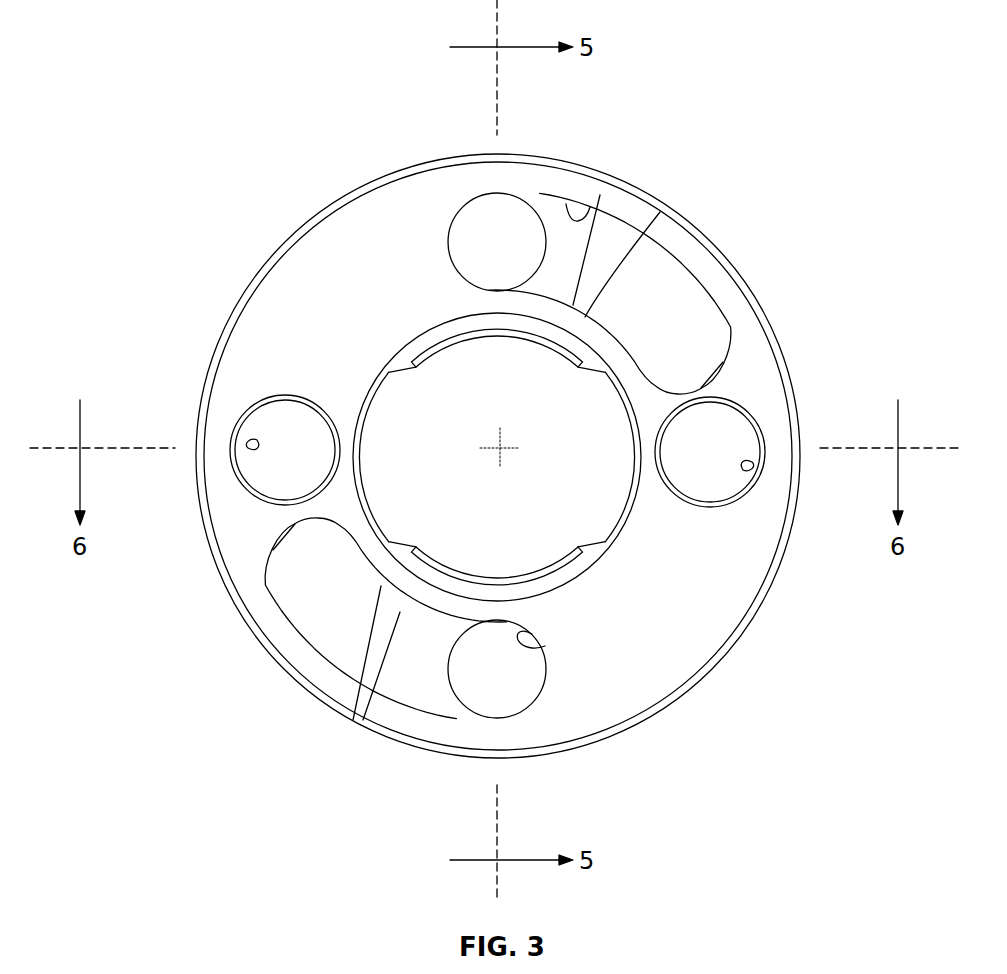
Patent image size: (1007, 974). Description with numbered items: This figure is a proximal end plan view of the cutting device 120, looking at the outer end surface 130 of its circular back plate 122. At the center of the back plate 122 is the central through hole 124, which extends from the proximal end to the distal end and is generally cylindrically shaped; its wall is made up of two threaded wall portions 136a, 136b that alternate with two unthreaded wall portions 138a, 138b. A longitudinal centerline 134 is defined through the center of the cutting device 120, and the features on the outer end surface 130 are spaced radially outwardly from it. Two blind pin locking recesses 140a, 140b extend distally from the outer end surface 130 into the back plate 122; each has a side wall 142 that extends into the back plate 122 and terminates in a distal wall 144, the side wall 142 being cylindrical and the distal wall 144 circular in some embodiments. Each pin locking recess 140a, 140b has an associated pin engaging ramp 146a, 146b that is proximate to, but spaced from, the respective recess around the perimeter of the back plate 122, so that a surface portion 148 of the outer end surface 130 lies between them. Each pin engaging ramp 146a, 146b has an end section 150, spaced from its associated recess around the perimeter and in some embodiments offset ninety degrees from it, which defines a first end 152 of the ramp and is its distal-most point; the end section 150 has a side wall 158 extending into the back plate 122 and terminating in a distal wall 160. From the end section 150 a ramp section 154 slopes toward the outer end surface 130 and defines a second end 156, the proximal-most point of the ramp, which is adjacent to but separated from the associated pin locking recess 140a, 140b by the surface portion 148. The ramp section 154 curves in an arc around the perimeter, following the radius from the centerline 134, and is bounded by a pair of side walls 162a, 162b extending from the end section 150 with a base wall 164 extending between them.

The cutting device 120 is at (735, 117).
The back plate 122 is at (772, 603).
The central through hole 124 is at (507, 417).
The outer end surface 130 is at (750, 642).
The longitudinal centerline 134 is at (495, 452).
The threaded wall portion 136a is at (559, 566).
The threaded wall portion 136b is at (433, 343).
The unthreaded wall portion 138a is at (345, 570).
The unthreaded wall portion 138b is at (710, 425).
The pin locking recess 140a is at (262, 462).
The pin locking recess 140b is at (735, 447).
The side wall 142 is at (257, 440).
The distal wall 144 is at (290, 427).
The pin engaging ramp 146a is at (323, 660).
The pin engaging ramp 146b is at (727, 315).
The surface portion 148 is at (693, 391).
The end section 150 is at (497, 215).
The first end 152 is at (449, 232).
The ramp section 154 is at (657, 307).
The second end 156 is at (700, 388).
The side wall 158 is at (578, 212).
The distal wall 160 is at (485, 228).
The side wall 162a is at (600, 195).
The side wall 162b is at (660, 212).
The base wall 164 is at (687, 350).